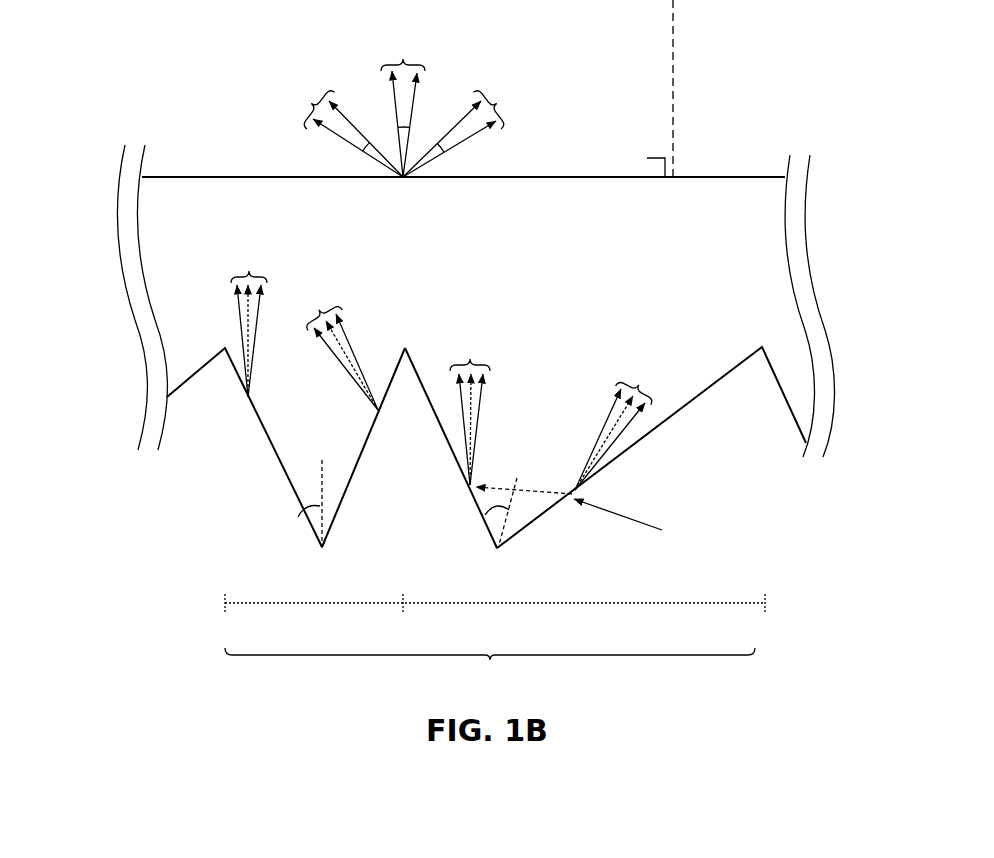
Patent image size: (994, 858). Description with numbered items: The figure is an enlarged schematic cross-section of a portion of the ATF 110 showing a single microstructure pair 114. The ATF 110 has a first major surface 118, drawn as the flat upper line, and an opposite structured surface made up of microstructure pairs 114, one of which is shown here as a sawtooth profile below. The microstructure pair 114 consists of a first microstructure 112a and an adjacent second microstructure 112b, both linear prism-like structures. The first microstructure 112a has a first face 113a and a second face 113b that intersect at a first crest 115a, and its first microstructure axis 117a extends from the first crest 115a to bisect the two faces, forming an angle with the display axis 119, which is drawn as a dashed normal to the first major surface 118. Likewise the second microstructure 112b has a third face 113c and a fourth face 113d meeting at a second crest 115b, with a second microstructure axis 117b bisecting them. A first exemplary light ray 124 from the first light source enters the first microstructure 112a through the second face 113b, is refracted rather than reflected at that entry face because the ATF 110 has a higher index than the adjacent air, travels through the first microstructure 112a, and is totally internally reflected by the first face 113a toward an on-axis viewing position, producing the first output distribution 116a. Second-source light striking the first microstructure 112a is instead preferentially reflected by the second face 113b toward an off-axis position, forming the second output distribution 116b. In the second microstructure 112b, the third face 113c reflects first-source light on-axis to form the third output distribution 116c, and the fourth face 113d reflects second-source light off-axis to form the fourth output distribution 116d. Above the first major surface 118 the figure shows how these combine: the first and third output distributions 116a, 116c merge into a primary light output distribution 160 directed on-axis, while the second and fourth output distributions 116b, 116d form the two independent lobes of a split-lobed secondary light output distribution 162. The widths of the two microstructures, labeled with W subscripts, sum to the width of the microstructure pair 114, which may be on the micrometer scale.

The ATF 110 is at (657, 262).
The first microstructure 112a is at (502, 470).
The second microstructure 112b is at (292, 437).
The first face 113a is at (438, 423).
The second face 113b is at (645, 437).
The third face 113c is at (253, 410).
The fourth face 113d is at (362, 456).
The microstructure pair 114 is at (495, 643).
The first crest 115a is at (502, 563).
The second crest 115b is at (322, 547).
The first output distribution 116a is at (469, 410).
The second output distribution 116b is at (630, 425).
The third output distribution 116c is at (247, 321).
The fourth output distribution 116d is at (331, 342).
The first microstructure axis 117a is at (468, 520).
The second microstructure axis 117b is at (279, 519).
The first major surface 118 is at (733, 177).
The display axis 119 is at (648, 90).
The first exemplary light ray 124 is at (648, 527).
The primary light output distribution 160 is at (403, 105).
The split-lobed secondary light output distribution 162 is at (407, 128).